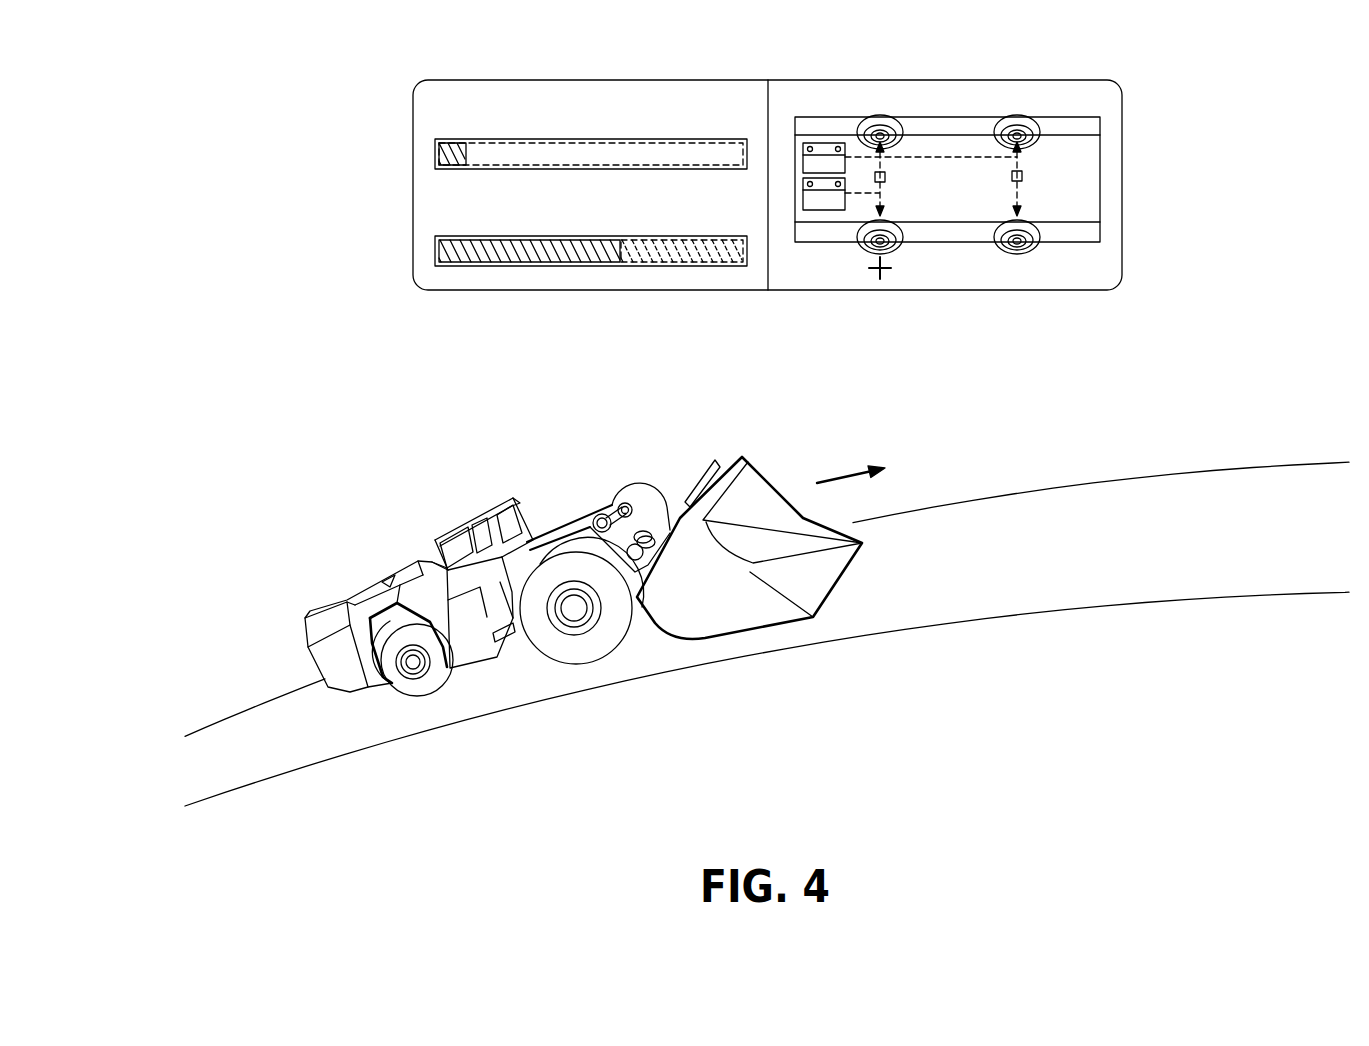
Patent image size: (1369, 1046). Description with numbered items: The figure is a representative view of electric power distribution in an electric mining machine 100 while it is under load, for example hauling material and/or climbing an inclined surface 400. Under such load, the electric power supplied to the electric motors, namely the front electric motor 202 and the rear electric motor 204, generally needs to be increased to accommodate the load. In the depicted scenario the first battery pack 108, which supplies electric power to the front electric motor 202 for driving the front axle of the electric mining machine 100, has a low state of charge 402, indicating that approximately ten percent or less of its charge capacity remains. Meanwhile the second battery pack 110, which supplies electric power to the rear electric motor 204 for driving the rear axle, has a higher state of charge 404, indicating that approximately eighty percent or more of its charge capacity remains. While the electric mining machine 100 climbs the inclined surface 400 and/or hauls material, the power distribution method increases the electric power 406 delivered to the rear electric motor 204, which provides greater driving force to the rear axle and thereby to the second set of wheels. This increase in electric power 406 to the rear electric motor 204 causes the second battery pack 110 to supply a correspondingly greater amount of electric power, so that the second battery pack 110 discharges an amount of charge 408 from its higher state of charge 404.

The electric mining machine 100 is at (1054, 100).
The first battery pack 108 is at (486, 115).
The second battery pack 110 is at (486, 209).
The front electric motor 202 is at (1027, 176).
The rear electric motor 204 is at (890, 175).
The inclined surface 400 is at (1025, 585).
The state of charge 402 is at (438, 156).
The state of charge 404 is at (497, 265).
The electric power 406 is at (908, 264).
The amount of charge 408 is at (680, 253).